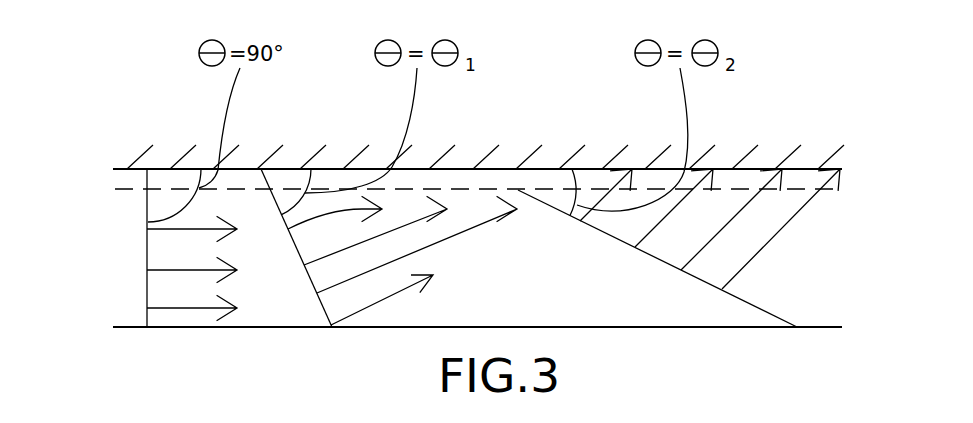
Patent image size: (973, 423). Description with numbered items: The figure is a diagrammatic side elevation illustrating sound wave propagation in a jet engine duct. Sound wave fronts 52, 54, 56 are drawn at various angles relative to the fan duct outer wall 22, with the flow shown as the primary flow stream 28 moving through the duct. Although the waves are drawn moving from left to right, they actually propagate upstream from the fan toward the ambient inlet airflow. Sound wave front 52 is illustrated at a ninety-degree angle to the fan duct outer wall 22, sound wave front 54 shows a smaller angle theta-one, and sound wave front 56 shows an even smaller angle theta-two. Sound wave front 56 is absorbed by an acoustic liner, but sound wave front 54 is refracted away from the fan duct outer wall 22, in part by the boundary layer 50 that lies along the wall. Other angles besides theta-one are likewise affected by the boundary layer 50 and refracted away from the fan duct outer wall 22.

The fan duct outer wall 22 is at (768, 170).
The primary flow stream 28 is at (820, 270).
The boundary layer 50 is at (815, 170).
The sound wave front 52 is at (147, 258).
The sound wave front 54 is at (311, 280).
The sound wave front 56 is at (600, 231).